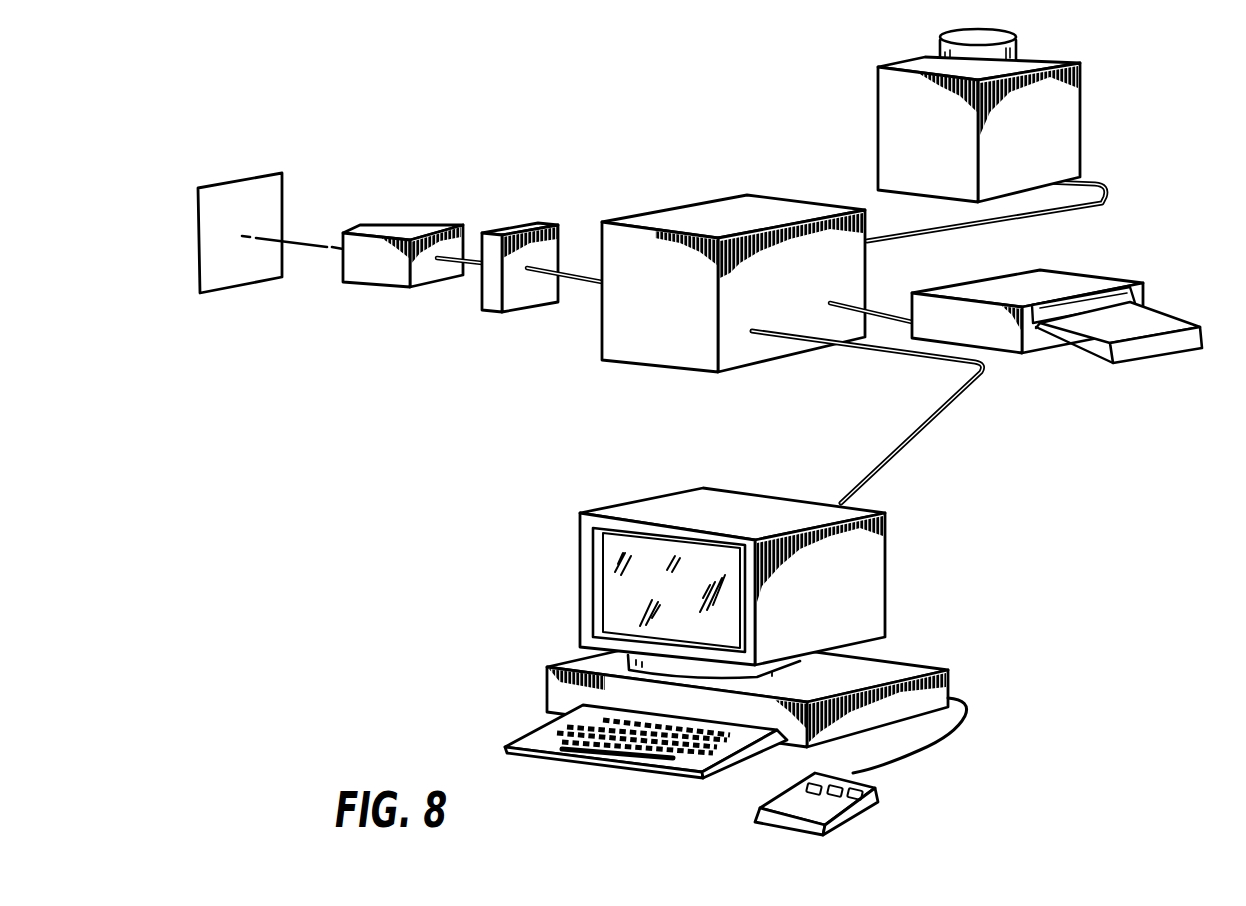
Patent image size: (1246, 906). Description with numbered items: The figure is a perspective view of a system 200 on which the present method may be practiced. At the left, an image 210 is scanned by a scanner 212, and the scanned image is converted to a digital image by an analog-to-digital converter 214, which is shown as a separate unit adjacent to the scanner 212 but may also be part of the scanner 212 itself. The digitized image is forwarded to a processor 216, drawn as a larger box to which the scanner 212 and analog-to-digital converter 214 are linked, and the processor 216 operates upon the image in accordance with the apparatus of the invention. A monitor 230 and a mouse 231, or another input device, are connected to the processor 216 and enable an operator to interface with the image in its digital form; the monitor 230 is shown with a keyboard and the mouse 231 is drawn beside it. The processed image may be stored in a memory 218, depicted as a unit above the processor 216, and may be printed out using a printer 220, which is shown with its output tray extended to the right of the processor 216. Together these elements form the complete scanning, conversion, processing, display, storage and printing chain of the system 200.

The system 200 is at (395, 470).
The image 210 is at (238, 188).
The scanner 212 is at (387, 228).
The analog-to-digital converter 214 is at (550, 299).
The processor 216 is at (792, 210).
The memory 218 is at (1070, 133).
The printer 220 is at (982, 282).
The monitor 230 is at (782, 508).
The mouse 231 is at (880, 801).